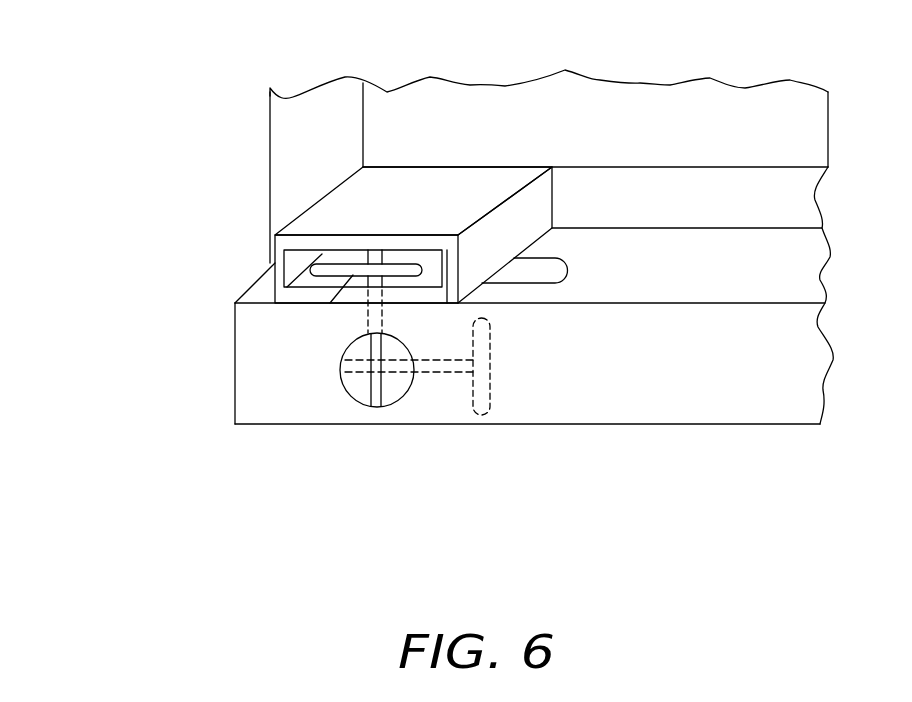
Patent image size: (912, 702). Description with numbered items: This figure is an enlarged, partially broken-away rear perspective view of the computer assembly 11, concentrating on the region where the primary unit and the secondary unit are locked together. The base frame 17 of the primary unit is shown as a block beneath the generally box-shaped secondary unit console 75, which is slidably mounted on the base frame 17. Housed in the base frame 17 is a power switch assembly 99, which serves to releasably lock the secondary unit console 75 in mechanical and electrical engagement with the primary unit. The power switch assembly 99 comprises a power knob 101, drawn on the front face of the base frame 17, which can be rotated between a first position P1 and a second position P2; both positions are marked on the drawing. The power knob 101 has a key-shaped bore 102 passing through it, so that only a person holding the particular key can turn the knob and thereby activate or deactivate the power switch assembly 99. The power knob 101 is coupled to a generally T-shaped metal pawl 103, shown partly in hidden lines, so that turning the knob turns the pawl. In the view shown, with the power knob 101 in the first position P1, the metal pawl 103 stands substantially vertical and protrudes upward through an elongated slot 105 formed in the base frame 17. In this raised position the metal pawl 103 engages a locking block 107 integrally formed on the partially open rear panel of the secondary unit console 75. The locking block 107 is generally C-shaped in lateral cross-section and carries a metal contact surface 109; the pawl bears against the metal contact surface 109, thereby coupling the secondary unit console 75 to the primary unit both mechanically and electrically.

The computer assembly 11 is at (160, 472).
The base frame 17 is at (728, 400).
The secondary unit console 75 is at (720, 107).
The power switch assembly 99 is at (412, 404).
The power knob 101 is at (360, 383).
The key-shaped bore 102 is at (378, 395).
The metal pawl 103 is at (330, 268).
The elongated slot 105 is at (543, 272).
The locking block 107 is at (423, 180).
The metal contact surface 109 is at (293, 257).
The first position P1 is at (368, 317).
The second position P2 is at (492, 393).